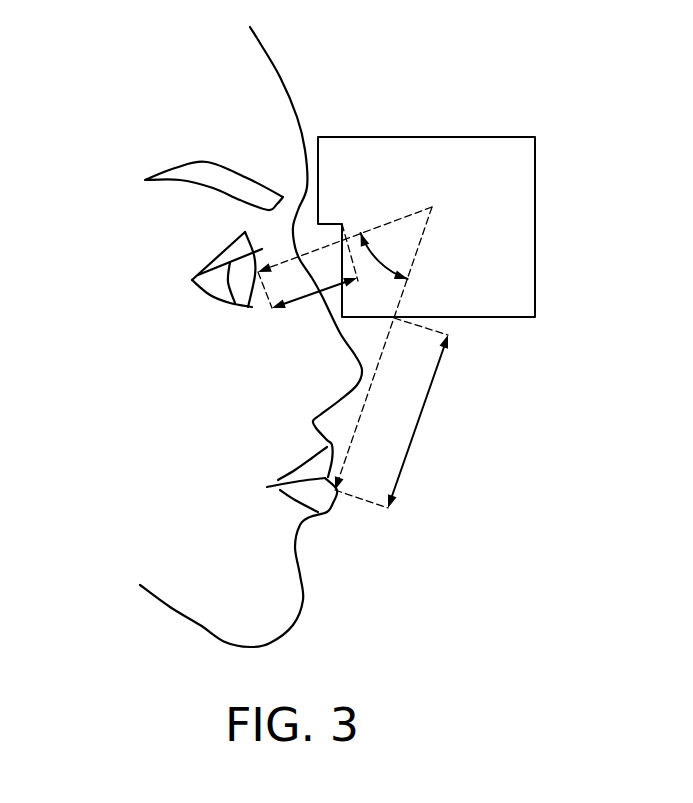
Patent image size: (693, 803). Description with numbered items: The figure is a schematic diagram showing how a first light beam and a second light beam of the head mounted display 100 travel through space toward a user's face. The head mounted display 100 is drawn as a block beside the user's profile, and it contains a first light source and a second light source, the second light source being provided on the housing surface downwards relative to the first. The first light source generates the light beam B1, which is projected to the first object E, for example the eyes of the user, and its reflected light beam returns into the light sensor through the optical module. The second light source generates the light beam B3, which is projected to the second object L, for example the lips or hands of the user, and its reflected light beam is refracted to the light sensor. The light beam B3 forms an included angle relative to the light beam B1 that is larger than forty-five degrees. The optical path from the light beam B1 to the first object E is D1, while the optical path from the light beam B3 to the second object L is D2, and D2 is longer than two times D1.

The head mounted display 100 is at (505, 167).
The first object E is at (210, 263).
The second object L is at (327, 498).
The light beam B1 is at (328, 242).
The light beam B3 is at (360, 412).
The optical path D1 is at (308, 278).
The optical path D2 is at (397, 413).